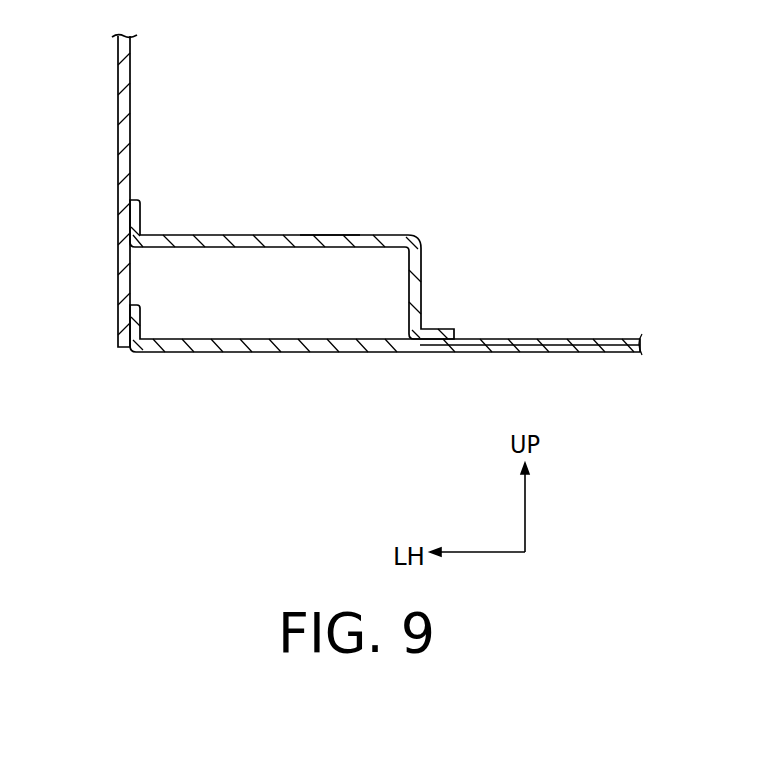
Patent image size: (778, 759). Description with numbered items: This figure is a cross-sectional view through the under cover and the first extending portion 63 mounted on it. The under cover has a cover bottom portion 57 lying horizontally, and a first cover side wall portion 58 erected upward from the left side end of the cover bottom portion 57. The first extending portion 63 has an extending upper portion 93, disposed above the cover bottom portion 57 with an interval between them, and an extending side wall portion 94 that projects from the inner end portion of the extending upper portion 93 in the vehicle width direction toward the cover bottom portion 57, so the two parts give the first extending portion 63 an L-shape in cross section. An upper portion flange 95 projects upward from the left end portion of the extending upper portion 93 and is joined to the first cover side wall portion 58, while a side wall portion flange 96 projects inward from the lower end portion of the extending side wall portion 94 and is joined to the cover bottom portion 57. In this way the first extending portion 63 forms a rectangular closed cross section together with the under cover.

The first cover side wall portion 58 is at (118, 106).
The extending upper portion 93 is at (262, 235).
The upper portion flange 95 is at (140, 222).
The extending side wall portion 94 is at (422, 275).
The side wall portion flange 96 is at (453, 330).
The first extending portion 63 is at (329, 235).
The cover bottom portion 57 is at (352, 352).